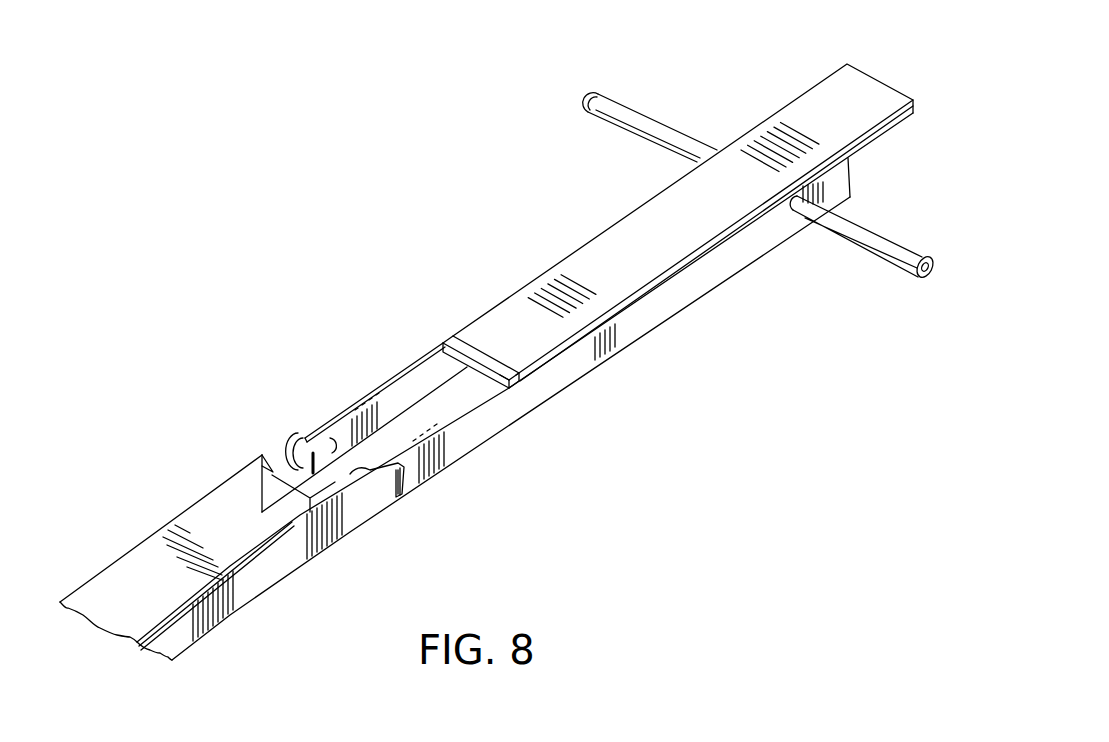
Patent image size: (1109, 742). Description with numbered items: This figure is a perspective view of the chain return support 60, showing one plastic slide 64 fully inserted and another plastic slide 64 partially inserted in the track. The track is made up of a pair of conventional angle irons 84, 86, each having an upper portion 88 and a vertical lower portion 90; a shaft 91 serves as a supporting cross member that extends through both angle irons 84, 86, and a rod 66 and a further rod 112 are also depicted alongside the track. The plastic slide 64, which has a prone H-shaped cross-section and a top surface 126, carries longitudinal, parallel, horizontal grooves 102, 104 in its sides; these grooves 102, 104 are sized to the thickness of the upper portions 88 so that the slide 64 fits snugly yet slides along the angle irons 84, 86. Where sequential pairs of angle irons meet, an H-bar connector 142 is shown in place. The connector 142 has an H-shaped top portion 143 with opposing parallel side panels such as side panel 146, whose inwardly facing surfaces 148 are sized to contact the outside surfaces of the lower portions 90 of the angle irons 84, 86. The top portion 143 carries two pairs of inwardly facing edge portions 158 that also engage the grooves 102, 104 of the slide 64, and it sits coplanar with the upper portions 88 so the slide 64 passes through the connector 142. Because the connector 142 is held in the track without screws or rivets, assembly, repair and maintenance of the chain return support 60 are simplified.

The chain return support 60 is at (374, 289).
The plastic slide 64 is at (871, 80).
The rod 66 is at (641, 113).
The angle iron 84 is at (372, 395).
The angle iron 86 is at (467, 447).
The upper portion 88 is at (433, 362).
The lower portion 90 is at (543, 391).
The shaft 91 is at (597, 121).
The groove 102 is at (458, 345).
The groove 104 is at (498, 378).
The pivot rod 112 is at (795, 204).
The bar top surface 126 is at (823, 105).
The H-bar connector 142 is at (285, 588).
The H-shaped top portion 143 is at (273, 472).
The side panel 146 is at (360, 517).
The inwardly facing surface 148 is at (296, 475).
The edge portion 158 is at (400, 498).